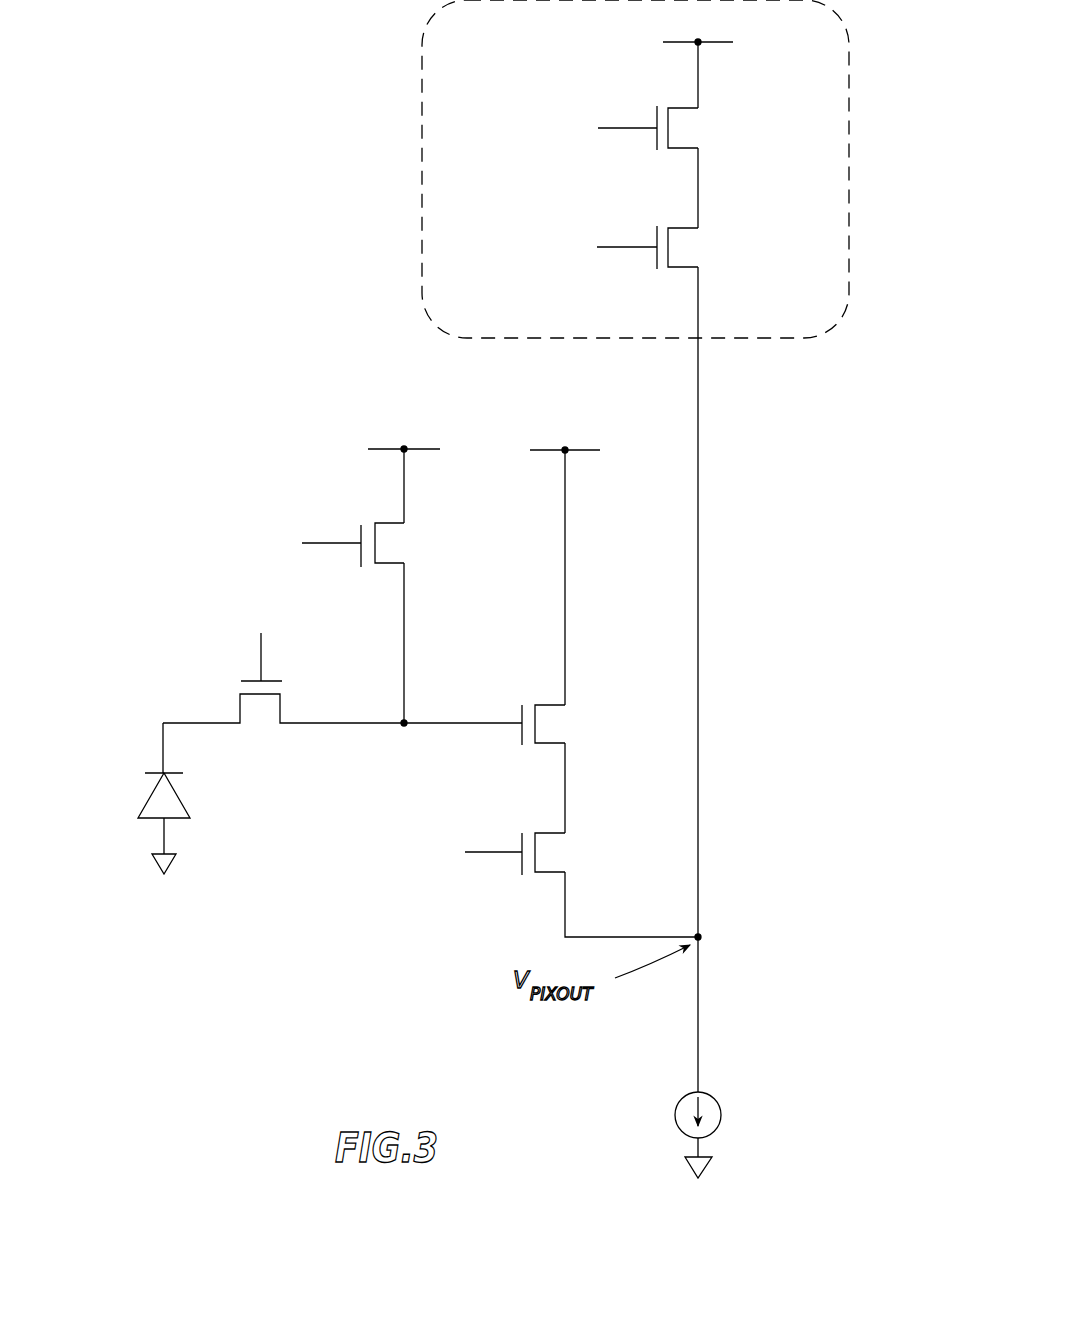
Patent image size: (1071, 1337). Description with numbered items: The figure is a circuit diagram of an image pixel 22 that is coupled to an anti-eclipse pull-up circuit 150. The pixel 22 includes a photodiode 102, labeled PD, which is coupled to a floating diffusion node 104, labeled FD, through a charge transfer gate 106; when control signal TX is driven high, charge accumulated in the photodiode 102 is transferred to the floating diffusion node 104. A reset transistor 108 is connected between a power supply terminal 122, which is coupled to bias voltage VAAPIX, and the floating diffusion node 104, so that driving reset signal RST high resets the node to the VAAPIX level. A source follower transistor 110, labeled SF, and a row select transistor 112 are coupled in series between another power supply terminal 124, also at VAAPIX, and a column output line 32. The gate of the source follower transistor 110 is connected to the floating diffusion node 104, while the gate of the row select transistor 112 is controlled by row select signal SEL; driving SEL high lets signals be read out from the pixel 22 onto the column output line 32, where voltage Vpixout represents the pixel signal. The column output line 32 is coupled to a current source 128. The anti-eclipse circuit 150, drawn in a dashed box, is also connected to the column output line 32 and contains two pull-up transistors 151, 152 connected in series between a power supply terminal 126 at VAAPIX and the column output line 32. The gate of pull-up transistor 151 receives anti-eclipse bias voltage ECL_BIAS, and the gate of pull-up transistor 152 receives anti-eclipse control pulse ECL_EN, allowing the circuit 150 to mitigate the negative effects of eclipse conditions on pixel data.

The image pixel 22 is at (228, 432).
The column output line 32 is at (698, 432).
The photodiode 102 is at (150, 790).
The floating diffusion node 104 is at (404, 720).
The charge transfer gate 106 is at (240, 705).
The reset transistor 108 is at (392, 522).
The source follower transistor 110 is at (548, 703).
The row select transistor 112 is at (546, 875).
The power supply terminal 122 is at (372, 440).
The power supply terminal 124 is at (620, 441).
The power supply terminal 126 is at (655, 42).
The current source 128 is at (722, 1100).
The anti-eclipse circuit 150 is at (849, 75).
The pull-up transistor 151 is at (706, 124).
The pull-up transistor 152 is at (702, 244).